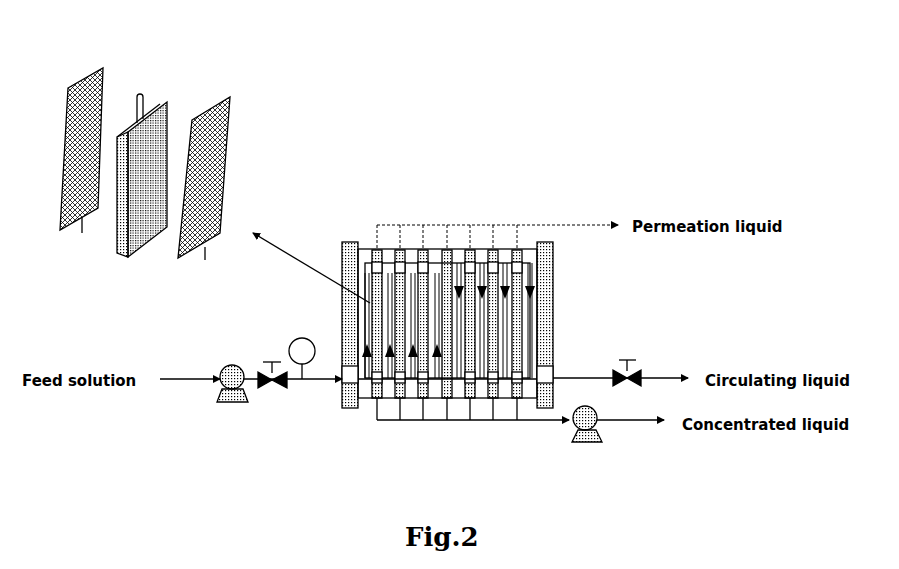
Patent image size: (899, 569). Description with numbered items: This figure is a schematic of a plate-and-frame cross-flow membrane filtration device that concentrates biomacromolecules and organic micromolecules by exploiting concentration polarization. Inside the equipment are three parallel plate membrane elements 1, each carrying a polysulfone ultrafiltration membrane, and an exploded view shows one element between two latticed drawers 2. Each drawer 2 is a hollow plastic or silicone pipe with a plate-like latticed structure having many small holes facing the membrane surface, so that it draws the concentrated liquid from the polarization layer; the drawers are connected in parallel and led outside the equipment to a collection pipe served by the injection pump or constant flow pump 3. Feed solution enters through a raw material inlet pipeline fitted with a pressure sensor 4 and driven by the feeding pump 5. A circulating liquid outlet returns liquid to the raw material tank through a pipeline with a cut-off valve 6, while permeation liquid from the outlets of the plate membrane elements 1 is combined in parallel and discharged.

The plate membrane element 1 is at (118, 254).
The drawer 2 is at (215, 103).
The injection pump or constant flow pump 3 is at (575, 442).
The pressure sensor 4 is at (310, 362).
The feeding pump 5 is at (227, 402).
The cut-off valve 6 is at (630, 358).